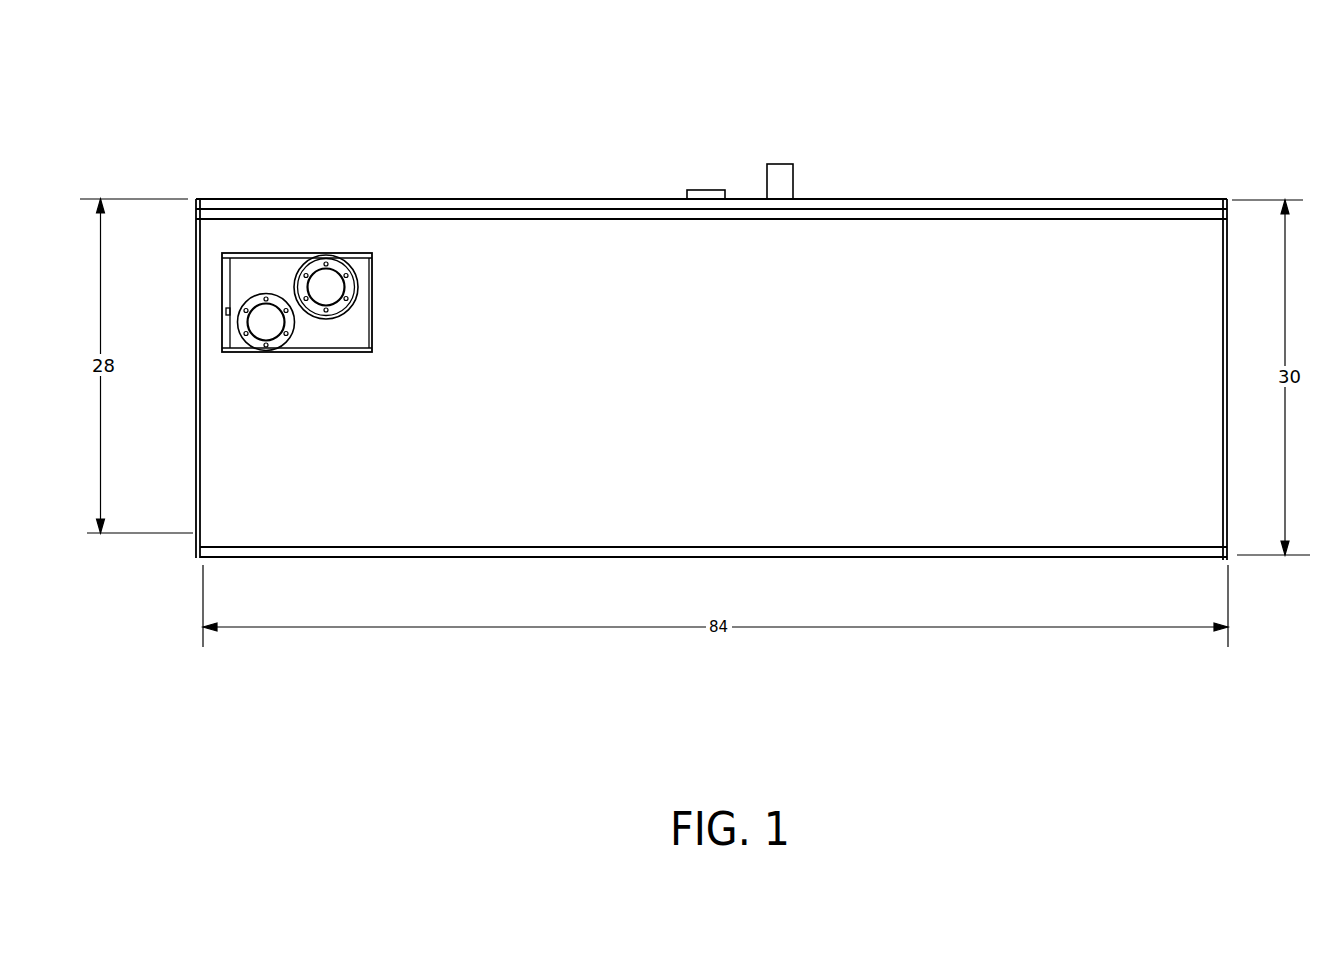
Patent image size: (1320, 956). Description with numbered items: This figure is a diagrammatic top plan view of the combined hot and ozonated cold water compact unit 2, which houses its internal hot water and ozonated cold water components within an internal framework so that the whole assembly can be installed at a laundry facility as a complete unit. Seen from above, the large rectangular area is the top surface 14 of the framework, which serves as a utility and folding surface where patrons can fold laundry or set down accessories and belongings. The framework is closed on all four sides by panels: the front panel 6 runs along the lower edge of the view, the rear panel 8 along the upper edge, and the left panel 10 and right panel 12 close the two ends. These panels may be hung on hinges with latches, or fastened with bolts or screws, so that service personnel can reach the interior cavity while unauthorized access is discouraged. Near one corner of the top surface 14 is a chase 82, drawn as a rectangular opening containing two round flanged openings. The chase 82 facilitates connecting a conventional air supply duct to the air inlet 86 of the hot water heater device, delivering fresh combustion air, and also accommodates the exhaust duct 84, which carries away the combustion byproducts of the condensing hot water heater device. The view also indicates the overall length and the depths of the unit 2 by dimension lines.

The combined hot and ozonated cold water compact unit 2 is at (1241, 151).
The front panel 6 is at (837, 553).
The rear panel 8 is at (975, 198).
The left panel 10 is at (1222, 363).
The right panel 12 is at (202, 413).
The top surface 14 is at (807, 442).
The chase 82 is at (373, 287).
The exhaust duct 84 is at (325, 257).
The air inlet 86 is at (256, 296).